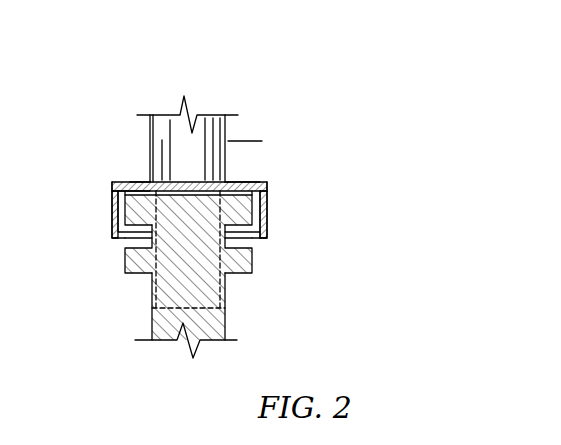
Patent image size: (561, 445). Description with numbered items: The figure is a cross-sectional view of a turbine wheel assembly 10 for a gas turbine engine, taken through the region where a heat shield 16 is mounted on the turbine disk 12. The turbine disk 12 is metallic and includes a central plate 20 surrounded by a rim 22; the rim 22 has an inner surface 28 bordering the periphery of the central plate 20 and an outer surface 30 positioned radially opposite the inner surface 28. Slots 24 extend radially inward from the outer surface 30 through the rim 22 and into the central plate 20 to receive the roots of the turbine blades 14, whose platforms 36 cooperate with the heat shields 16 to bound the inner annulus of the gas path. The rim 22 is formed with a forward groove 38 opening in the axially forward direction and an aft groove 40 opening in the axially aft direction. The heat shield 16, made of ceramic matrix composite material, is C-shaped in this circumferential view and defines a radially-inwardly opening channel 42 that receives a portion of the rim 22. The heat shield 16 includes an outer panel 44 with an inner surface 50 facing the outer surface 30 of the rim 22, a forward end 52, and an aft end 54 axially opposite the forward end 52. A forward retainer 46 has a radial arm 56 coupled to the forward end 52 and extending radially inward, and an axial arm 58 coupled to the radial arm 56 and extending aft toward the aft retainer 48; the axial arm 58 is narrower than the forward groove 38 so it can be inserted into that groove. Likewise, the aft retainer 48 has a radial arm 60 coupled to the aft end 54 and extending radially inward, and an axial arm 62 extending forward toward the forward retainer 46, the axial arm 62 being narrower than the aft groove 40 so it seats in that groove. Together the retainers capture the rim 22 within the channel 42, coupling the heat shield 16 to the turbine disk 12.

The turbine wheel assembly 10 is at (185, 204).
The turbine disk 12 is at (196, 283).
The turbine blade 14 is at (136, 117).
The heat shield 16 is at (116, 179).
The central plate 20 is at (165, 344).
The rim 22 is at (185, 220).
The slot 24 is at (165, 313).
The inner surface 28 is at (149, 286).
The outer surface 30 is at (113, 184).
The platform 36 is at (139, 173).
The forward groove 38 is at (119, 247).
The aft groove 40 is at (250, 239).
The radially-inwardly opening channel 42 is at (262, 233).
The outer panel 44 is at (243, 170).
The forward retainer 46 is at (108, 212).
The aft retainer 48 is at (272, 205).
The inner surface 50 is at (196, 185).
The forward end 52 is at (124, 174).
The aft end 54 is at (253, 170).
The radial arm 56 is at (112, 227).
The axial arm 58 is at (125, 238).
The radial arm 60 is at (267, 222).
The axial arm 62 is at (238, 242).